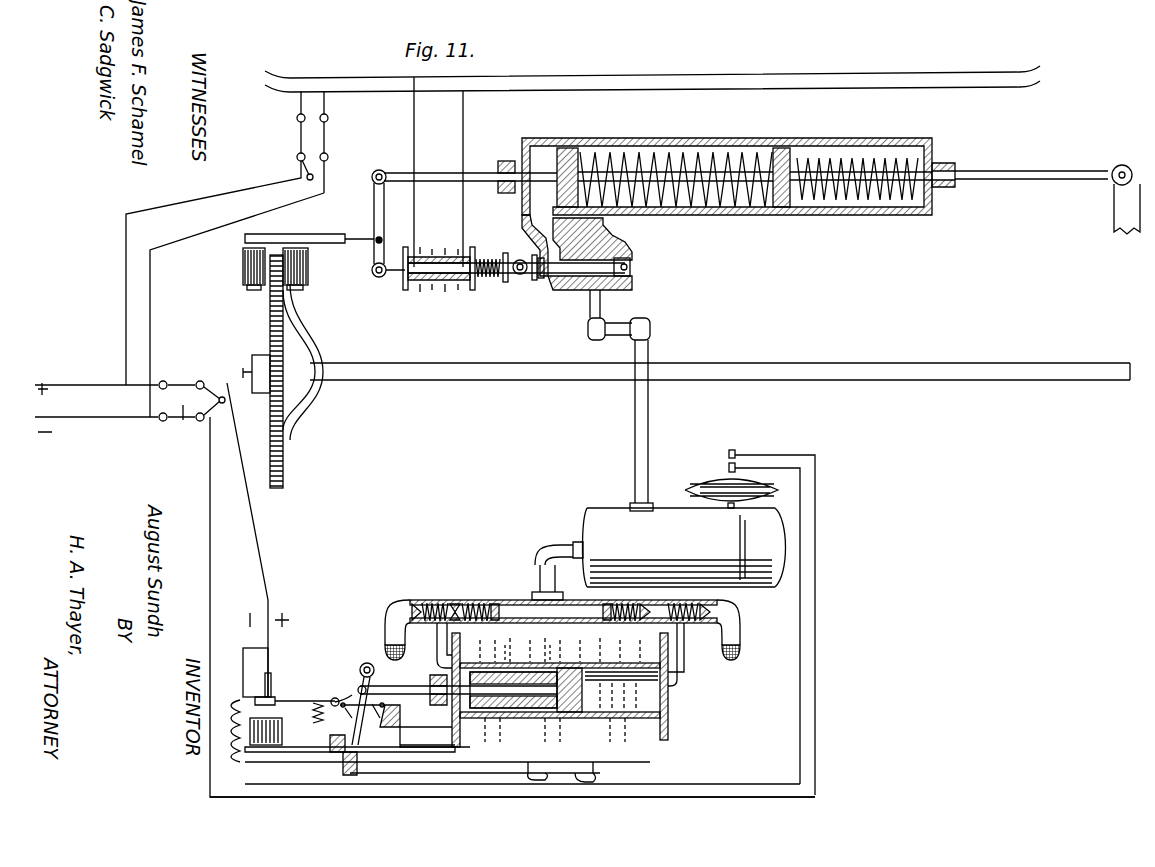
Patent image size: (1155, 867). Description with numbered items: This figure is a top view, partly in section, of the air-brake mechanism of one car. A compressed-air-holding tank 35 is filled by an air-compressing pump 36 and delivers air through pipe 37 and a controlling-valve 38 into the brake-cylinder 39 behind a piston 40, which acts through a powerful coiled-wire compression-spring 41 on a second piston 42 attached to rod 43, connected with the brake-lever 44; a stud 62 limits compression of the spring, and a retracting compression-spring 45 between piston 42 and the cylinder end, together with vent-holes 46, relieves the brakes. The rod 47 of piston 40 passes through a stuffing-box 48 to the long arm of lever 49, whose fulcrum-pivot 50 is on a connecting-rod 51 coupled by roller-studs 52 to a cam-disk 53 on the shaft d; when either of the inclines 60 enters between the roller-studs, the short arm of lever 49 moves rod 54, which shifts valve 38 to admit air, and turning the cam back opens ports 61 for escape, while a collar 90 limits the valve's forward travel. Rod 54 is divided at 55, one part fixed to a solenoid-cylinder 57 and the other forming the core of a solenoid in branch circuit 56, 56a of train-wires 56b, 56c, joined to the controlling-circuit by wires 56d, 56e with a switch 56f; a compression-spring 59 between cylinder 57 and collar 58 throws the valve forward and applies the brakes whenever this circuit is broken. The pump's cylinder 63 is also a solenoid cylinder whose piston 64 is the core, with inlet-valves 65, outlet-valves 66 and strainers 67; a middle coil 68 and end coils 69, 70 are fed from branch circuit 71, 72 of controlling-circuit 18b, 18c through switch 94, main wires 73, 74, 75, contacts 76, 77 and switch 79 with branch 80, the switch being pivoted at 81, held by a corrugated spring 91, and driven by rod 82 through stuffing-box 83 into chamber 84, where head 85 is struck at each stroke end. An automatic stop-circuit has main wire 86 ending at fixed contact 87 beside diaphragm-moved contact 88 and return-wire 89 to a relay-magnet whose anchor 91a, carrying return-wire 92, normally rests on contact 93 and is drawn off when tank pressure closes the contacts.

The controlling-circuit wire 18b is at (119, 378).
The controlling-circuit wire 18c is at (119, 428).
The compressed-air-holding tank 35 is at (607, 520).
The air-compressing pump 36 is at (448, 602).
The pipe 37 is at (648, 432).
The controlling-valve 38 is at (572, 290).
The brake-cylinder 39 is at (540, 140).
The piston 40 is at (578, 146).
The coiled-wire compression-spring 41 is at (690, 150).
The piston 42 is at (778, 146).
The rod 43 is at (1052, 171).
The brake-lever 44 is at (1116, 204).
The retracting compression-spring 45 is at (870, 160).
The vent-holes 46 is at (800, 158).
The rod 47 is at (390, 172).
The stuffing-box 48 is at (493, 167).
The lever 49 is at (372, 209).
The fulcrum-pivot 50 is at (382, 238).
The connecting-rod 51 is at (335, 244).
The roller-studs 52 is at (241, 270).
The cam-disk 53 is at (285, 470).
The rod 54 is at (405, 282).
The division of rod 55 is at (445, 284).
The branch circuit wire 56 is at (428, 172).
The branch circuit wire 56a is at (463, 121).
The train-wire 56b is at (711, 75).
The train-wire 56c is at (738, 92).
The wire 56d is at (238, 222).
The wire 56e is at (226, 196).
The circuit closing and breaking switch 56f is at (333, 128).
The solenoid-cylinder 57 is at (485, 246).
The collar 58 is at (506, 284).
The compression-spring 59 is at (508, 258).
The inclines 60 is at (297, 338).
The ports 61 is at (631, 267).
The stud 62 is at (640, 150).
The cylinder 63 is at (660, 693).
The piston 64 is at (560, 642).
The inlet-valves 65 is at (418, 603).
The outlet-valves 66 is at (480, 603).
The strainer 67 is at (400, 662).
The middle coil 68 is at (557, 735).
The end coil 69 is at (490, 735).
The end coil 70 is at (620, 735).
The branch circuit wire 71 is at (500, 607).
The return circuit-wire 72 is at (261, 540).
The main wire 73 is at (543, 774).
The main wire 74 is at (579, 774).
The main wire 75 is at (435, 739).
The contact 76 is at (330, 742).
The contact 77 is at (401, 713).
The switch 79 is at (352, 700).
The branch 80 is at (343, 766).
The pivot 81 is at (364, 664).
The rod 82 is at (385, 690).
The stuffing-box 83 is at (436, 705).
The interior chamber 84 is at (510, 655).
The head 85 is at (553, 655).
The main wire 86 is at (815, 757).
The fixed contact 87 is at (732, 450).
The contact 88 is at (728, 468).
The return-wire 89 is at (715, 784).
The collar / relay-magnet 90 is at (540, 280).
The corrugated spring 91 is at (370, 712).
The anchor 91a is at (278, 699).
The return-wire 92 is at (250, 739).
The contact 93 is at (272, 676).
The circuit breaking and closing switch 94 is at (183, 420).
The shaft d is at (720, 359).